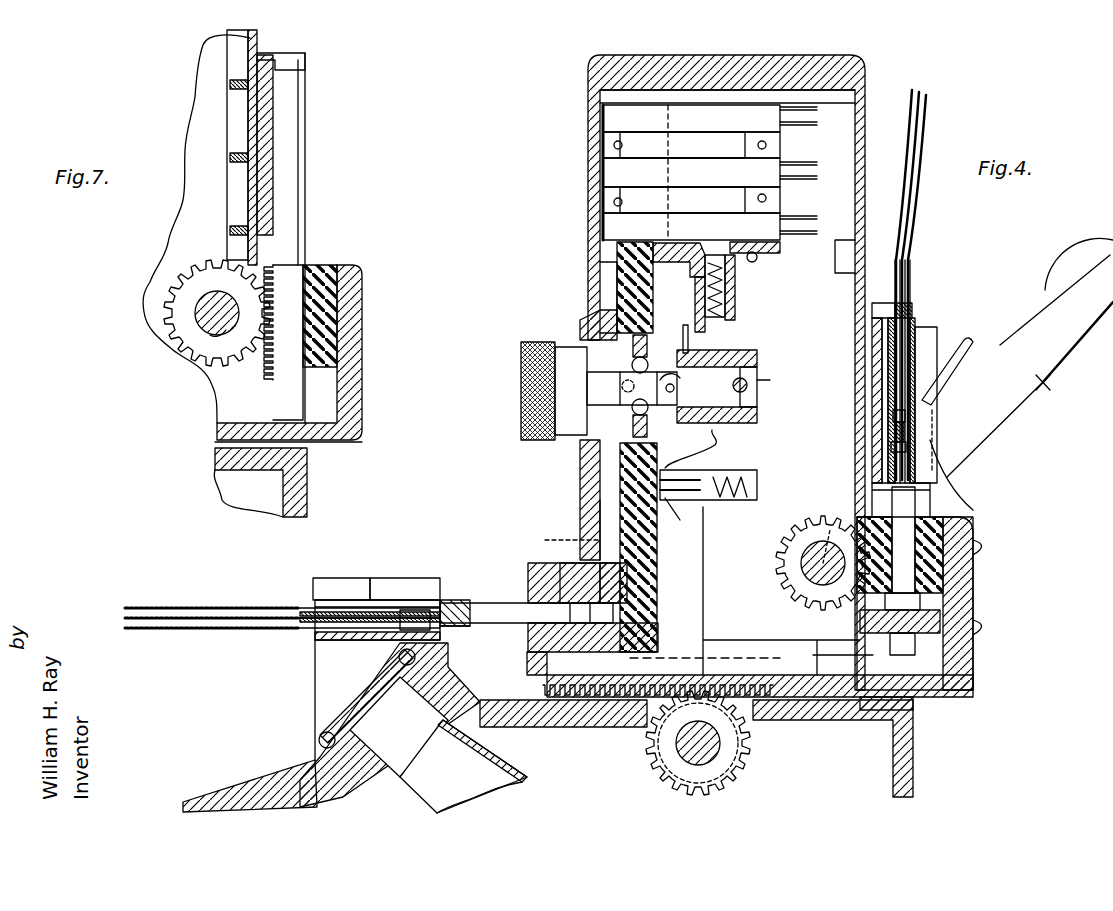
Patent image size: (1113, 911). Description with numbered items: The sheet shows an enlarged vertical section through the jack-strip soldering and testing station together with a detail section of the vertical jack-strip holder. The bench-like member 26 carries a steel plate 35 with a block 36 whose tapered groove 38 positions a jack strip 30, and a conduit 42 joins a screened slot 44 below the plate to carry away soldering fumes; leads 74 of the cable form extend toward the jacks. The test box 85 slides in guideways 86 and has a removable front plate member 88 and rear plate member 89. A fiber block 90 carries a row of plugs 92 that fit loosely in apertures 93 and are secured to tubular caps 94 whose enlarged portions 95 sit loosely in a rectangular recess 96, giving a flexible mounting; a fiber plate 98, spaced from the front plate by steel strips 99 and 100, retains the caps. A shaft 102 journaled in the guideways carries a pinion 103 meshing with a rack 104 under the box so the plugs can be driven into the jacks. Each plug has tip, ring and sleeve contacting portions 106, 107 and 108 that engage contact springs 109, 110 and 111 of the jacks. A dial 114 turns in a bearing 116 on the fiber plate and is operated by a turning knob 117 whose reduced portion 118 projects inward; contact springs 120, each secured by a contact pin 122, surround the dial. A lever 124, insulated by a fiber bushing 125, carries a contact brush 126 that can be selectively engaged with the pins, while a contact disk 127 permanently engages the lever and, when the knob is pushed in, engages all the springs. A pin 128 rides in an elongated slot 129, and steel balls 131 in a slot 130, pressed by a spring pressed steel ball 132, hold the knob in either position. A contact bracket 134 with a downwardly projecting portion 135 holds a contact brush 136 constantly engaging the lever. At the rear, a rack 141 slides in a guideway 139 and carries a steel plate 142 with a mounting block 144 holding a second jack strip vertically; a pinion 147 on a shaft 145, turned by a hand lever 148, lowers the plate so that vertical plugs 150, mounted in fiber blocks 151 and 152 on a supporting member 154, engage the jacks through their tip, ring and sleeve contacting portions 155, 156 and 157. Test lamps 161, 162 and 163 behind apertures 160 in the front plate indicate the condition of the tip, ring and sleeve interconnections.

In FIG. 7, the bench-like member 26 is at (300, 478).
In FIG. 4, the bench-like member 26 is at (825, 722).
In FIG. 4, the jack strip 30 is at (460, 596).
In FIG. 4, the steel plate 35 is at (318, 640).
In FIG. 4, the block 36 is at (320, 580).
In FIG. 4, the tapered groove 38 is at (392, 580).
In FIG. 4, the conduit 42 is at (510, 762).
In FIG. 4, the screened slot 44 is at (380, 690).
In FIG. 4, the leads 74 is at (196, 612).
In FIG. 7, the box 85 is at (205, 120).
In FIG. 4, the box 85 is at (862, 122).
In FIG. 4, the guideways 86 is at (530, 697).
In FIG. 4, the front plate member 88 is at (605, 270).
In FIG. 7, the rear plate member 89 is at (228, 97).
In FIG. 4, the rear plate member 89 is at (862, 258).
In FIG. 4, the fiber block 90 is at (566, 532).
In FIG. 4, the plugs 92 is at (497, 600).
In FIG. 4, the apertures 93 is at (548, 575).
In FIG. 4, the tubular caps 94 is at (595, 561).
In FIG. 4, the enlarged portions 95 is at (660, 595).
In FIG. 4, the rectangular recess 96 is at (578, 575).
In FIG. 4, the fiber plate 98 is at (648, 545).
In FIG. 4, the steel strip 99 is at (600, 262).
In FIG. 4, the steel strip 100 is at (597, 510).
In FIG. 4, the shaft 102 is at (710, 752).
In FIG. 4, the pinion 103 is at (672, 762).
In FIG. 4, the rack 104 is at (740, 658).
In FIG. 4, the tip contacting portion 106 is at (365, 642).
In FIG. 4, the ring contacting portion 107 is at (412, 628).
In FIG. 4, the sleeve contacting portion 108 is at (450, 628).
In FIG. 4, the contact spring 109 is at (370, 608).
In FIG. 4, the contact spring 110 is at (937, 410).
In FIG. 4, the contact spring 111 is at (770, 382).
In FIG. 4, the dial 114 is at (585, 320).
In FIG. 4, the bearing 116 is at (610, 300).
In FIG. 4, the turning knob 117 is at (560, 372).
In FIG. 4, the reduced portion 118 is at (748, 385).
In FIG. 4, the contact springs 120 is at (757, 470).
In FIG. 4, the contact pin 122 is at (700, 500).
In FIG. 4, the lever 124 is at (757, 412).
In FIG. 4, the fiber bushing 125 is at (757, 360).
In FIG. 4, the contact brush 126 is at (750, 498).
In FIG. 4, the contact disk 127 is at (690, 340).
In FIG. 4, the pin 128 is at (676, 390).
In FIG. 4, the elongated slot 129 is at (691, 377).
In FIG. 4, the slot 130 is at (636, 390).
In FIG. 4, the steel balls 131 is at (632, 388).
In FIG. 4, the spring pressed steel ball 132 is at (632, 362).
In FIG. 4, the contact bracket 134 is at (756, 262).
In FIG. 4, the downwardly projecting portion 135 is at (725, 300).
In FIG. 4, the contact brush 136 is at (708, 320).
In FIG. 7, the guideway 139 is at (300, 63).
In FIG. 4, the guideway 139 is at (872, 315).
In FIG. 7, the rack 141 is at (292, 185).
In FIG. 4, the rack 141 is at (915, 705).
In FIG. 7, the steel plate 142 is at (270, 125).
In FIG. 4, the steel plate 142 is at (872, 400).
In FIG. 4, the mounting block 144 is at (925, 330).
In FIG. 7, the shaft 145 is at (212, 332).
In FIG. 4, the shaft 145 is at (826, 540).
In FIG. 7, the pinion 147 is at (185, 310).
In FIG. 4, the pinion 147 is at (795, 563).
In FIG. 4, the hand lever 148 is at (1050, 394).
In FIG. 4, the plugs 150 is at (945, 540).
In FIG. 7, the fiber block 151 is at (325, 322).
In FIG. 4, the fiber block 151 is at (945, 588).
In FIG. 4, the fiber block 152 is at (945, 618).
In FIG. 7, the supporting member 154 is at (352, 395).
In FIG. 4, the supporting member 154 is at (975, 682).
In FIG. 4, the tip contacting portion 155 is at (937, 420).
In FIG. 4, the ring contacting portion 156 is at (915, 458).
In FIG. 4, the sleeve contacting portion 157 is at (945, 483).
In FIG. 4, the apertures 160 is at (602, 120).
In FIG. 4, the test lamps 161 is at (605, 105).
In FIG. 4, the test lamps 162 is at (612, 168).
In FIG. 4, the test lamps 163 is at (612, 218).